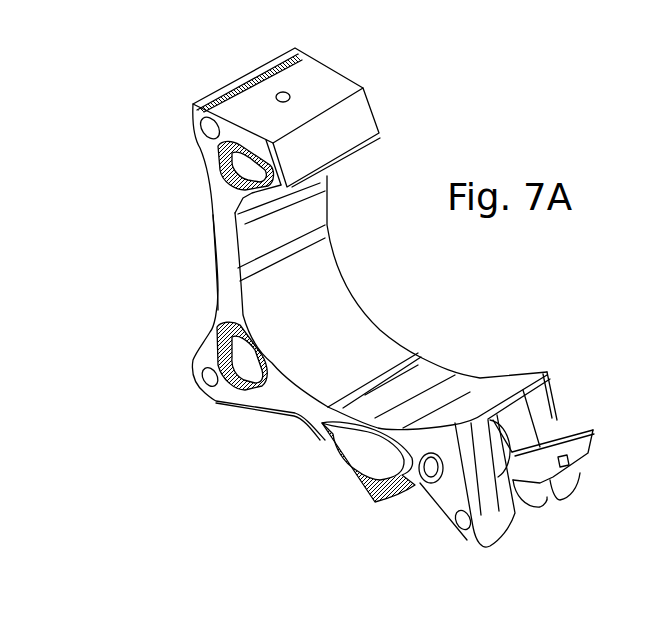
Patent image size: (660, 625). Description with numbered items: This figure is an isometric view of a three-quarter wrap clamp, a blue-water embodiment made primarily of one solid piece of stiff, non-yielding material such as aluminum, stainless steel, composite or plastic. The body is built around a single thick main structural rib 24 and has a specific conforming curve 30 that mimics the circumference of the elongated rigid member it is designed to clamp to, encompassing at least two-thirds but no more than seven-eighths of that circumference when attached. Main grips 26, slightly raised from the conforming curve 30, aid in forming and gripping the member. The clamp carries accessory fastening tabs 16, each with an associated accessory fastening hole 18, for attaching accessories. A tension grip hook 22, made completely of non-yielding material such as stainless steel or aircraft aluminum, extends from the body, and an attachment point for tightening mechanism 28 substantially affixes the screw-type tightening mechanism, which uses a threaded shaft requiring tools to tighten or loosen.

The accessory fastening tab 16 is at (470, 537).
The accessory fastening hole 18 is at (210, 372).
The tension grip hook 22 is at (580, 430).
The main structural rib 24 is at (220, 243).
The main grip 26 is at (425, 368).
The attachment point for tightening mechanism 28 is at (431, 470).
The specific conforming curve 30 is at (315, 280).